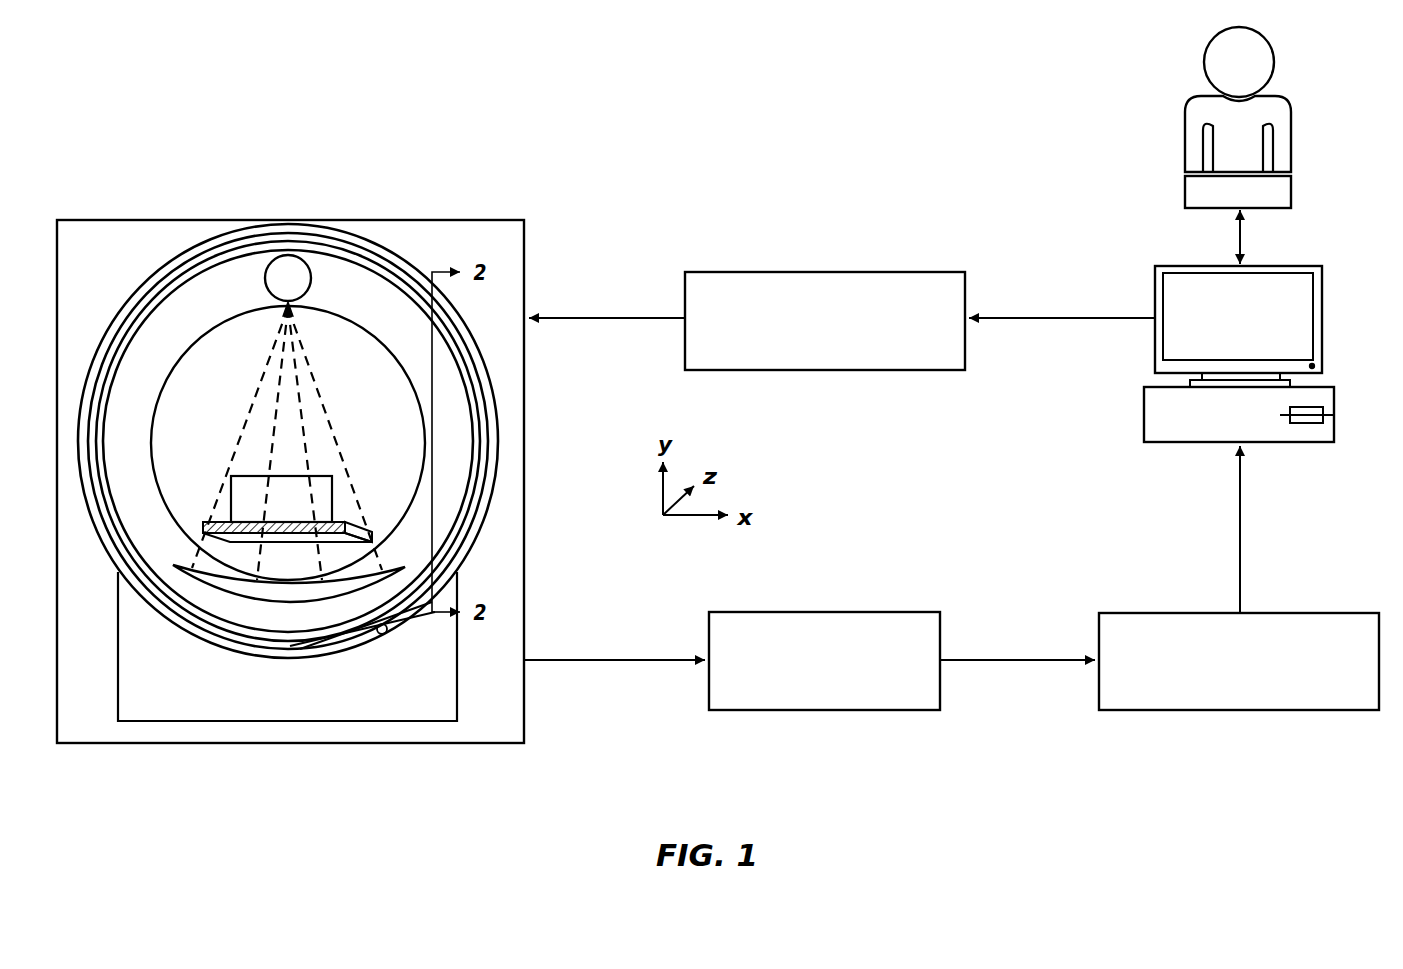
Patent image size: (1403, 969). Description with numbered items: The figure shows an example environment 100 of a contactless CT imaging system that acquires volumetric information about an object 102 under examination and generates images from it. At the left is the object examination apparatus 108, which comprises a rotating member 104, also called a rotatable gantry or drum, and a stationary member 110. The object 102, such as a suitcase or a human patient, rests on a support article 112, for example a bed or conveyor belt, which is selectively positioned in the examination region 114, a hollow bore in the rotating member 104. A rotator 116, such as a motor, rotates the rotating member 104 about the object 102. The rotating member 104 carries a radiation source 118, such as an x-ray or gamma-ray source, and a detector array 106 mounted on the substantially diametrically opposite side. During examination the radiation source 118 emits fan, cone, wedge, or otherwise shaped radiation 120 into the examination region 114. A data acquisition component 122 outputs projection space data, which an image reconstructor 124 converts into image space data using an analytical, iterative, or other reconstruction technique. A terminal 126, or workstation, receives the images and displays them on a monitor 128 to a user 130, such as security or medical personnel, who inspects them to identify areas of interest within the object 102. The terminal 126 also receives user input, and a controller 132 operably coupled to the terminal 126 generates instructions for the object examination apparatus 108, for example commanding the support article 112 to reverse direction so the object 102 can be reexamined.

The environment 100 is at (221, 104).
The object 102 is at (249, 476).
The rotating member 104 is at (466, 366).
The detector array 106 is at (230, 600).
The object examination apparatus 108 is at (496, 220).
The stationary member 110 is at (497, 394).
The support article 112 is at (217, 522).
The examination region 114 is at (278, 438).
The rotator 116 is at (380, 636).
The radiation source 118 is at (296, 255).
The radiation 120 is at (258, 386).
The data acquisition component 122 is at (714, 612).
The image reconstructor 124 is at (1116, 612).
The terminal 126 is at (1143, 410).
The monitor 128 is at (1152, 282).
The user 130 is at (1184, 112).
The controller 132 is at (690, 272).